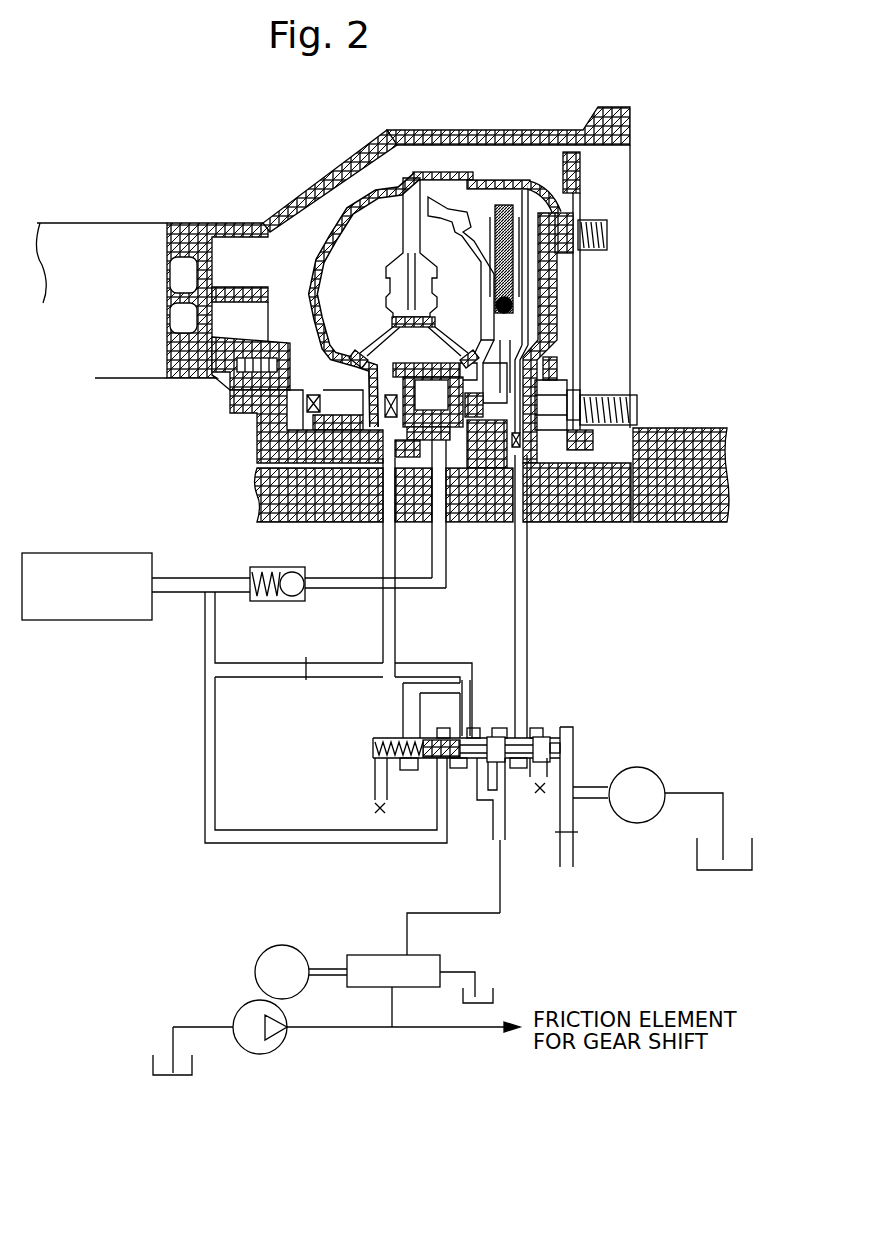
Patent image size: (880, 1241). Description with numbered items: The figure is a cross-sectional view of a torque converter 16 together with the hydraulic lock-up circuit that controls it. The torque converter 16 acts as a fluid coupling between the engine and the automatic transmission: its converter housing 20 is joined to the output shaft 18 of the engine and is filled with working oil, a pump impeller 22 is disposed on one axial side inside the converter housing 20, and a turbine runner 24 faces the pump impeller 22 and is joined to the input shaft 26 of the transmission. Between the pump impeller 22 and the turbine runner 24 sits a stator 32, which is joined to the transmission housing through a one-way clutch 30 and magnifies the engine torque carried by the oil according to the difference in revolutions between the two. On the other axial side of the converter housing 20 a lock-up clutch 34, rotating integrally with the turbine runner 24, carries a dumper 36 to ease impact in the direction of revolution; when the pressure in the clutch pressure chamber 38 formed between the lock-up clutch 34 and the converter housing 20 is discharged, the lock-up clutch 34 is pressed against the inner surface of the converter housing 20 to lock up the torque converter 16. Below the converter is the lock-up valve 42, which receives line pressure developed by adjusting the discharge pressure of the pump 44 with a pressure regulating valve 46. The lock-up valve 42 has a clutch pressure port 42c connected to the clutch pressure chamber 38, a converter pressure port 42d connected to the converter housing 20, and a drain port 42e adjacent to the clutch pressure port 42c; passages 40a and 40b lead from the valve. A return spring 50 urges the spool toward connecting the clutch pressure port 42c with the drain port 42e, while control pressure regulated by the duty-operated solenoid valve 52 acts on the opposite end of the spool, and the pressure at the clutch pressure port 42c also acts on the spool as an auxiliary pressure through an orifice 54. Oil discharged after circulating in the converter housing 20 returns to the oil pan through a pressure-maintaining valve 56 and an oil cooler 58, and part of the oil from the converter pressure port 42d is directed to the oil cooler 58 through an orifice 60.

The torque converter 16 is at (452, 164).
The output shaft 18 is at (667, 428).
The converter housing 20 is at (352, 238).
The pump impeller 22 is at (330, 212).
The turbine runner 24 is at (430, 197).
The input shaft 26 is at (262, 531).
The one-way clutch 30 is at (437, 427).
The stator 32 is at (382, 332).
The lock-up clutch 34 is at (538, 278).
The dumper 36 is at (500, 180).
The clutch pressure chamber 38 is at (538, 317).
The oil passage 40a is at (507, 773).
The oil passage 40b is at (482, 790).
The lock-up valve 42 is at (578, 727).
The clutch pressure port 42c is at (521, 737).
The converter pressure port 42d is at (463, 710).
The drain port 42e is at (545, 773).
The pump 44 is at (240, 1010).
The pressure regulating valve 46 is at (367, 953).
The return spring 50 is at (398, 765).
The solenoid valve 52 is at (660, 773).
The orifice 54 is at (403, 718).
The pressure-maintaining valve 56 is at (280, 603).
The oil cooler 58 is at (155, 607).
The orifice 60 is at (305, 660).